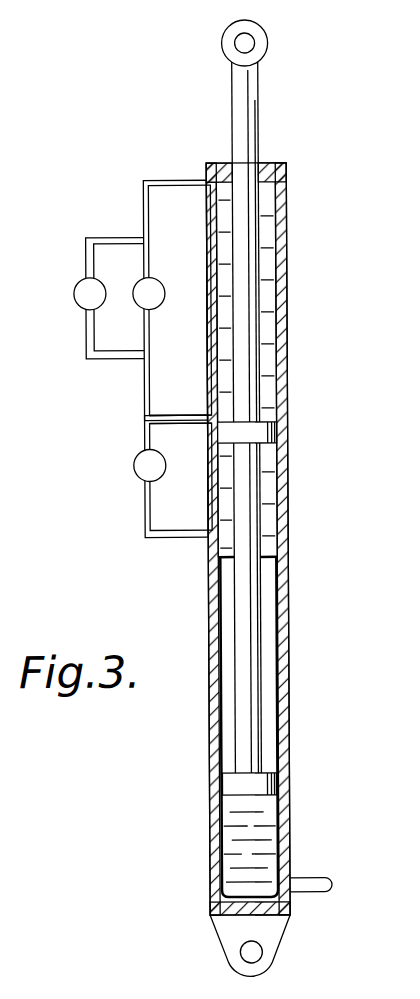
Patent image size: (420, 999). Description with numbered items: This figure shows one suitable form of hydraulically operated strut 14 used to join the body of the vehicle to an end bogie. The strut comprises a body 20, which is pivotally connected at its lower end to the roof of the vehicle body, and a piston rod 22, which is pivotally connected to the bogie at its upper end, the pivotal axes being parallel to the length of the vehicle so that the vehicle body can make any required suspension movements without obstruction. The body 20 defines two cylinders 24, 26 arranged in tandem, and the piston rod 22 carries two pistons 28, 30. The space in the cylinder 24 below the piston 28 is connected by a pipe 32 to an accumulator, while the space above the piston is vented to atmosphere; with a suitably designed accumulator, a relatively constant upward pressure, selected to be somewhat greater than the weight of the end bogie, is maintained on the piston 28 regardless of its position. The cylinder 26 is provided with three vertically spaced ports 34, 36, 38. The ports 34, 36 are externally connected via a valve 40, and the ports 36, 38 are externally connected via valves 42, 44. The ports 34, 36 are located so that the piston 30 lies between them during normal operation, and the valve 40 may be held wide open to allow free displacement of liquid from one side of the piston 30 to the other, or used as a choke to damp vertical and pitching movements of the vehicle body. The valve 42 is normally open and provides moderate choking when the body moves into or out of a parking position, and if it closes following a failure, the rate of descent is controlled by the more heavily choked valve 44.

The hydraulically operated strut 14 is at (300, 333).
The body 20 is at (284, 678).
The piston rod 22 is at (252, 96).
The cylinder 24 is at (270, 709).
The cylinder 26 is at (270, 236).
The piston 28 is at (263, 776).
The piston 30 is at (262, 440).
The pipe 32 is at (312, 878).
The port 34 is at (210, 541).
The port 36 is at (212, 416).
The port 38 is at (205, 182).
The valve 40 is at (133, 464).
The valve 42 is at (168, 299).
The valve 44 is at (75, 296).